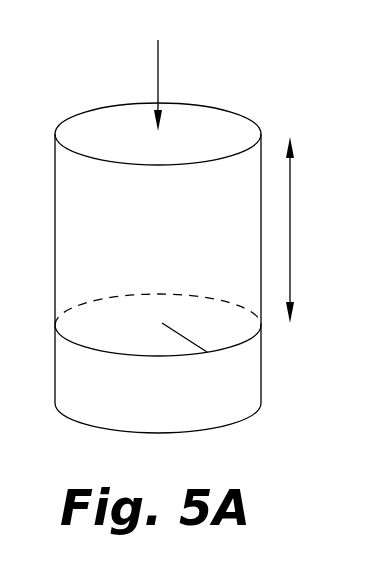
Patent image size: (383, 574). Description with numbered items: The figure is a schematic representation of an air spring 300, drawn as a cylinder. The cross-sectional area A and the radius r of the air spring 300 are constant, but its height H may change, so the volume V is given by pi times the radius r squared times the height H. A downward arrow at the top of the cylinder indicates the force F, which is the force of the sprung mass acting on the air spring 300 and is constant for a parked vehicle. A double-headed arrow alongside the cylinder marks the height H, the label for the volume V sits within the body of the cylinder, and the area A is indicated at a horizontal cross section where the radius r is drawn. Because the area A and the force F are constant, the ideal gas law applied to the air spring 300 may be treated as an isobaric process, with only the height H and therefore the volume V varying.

The air spring 300 is at (262, 72).
The force F is at (156, 70).
The height H is at (304, 230).
The volume V is at (158, 263).
The area A is at (153, 331).
The radius r is at (181, 337).